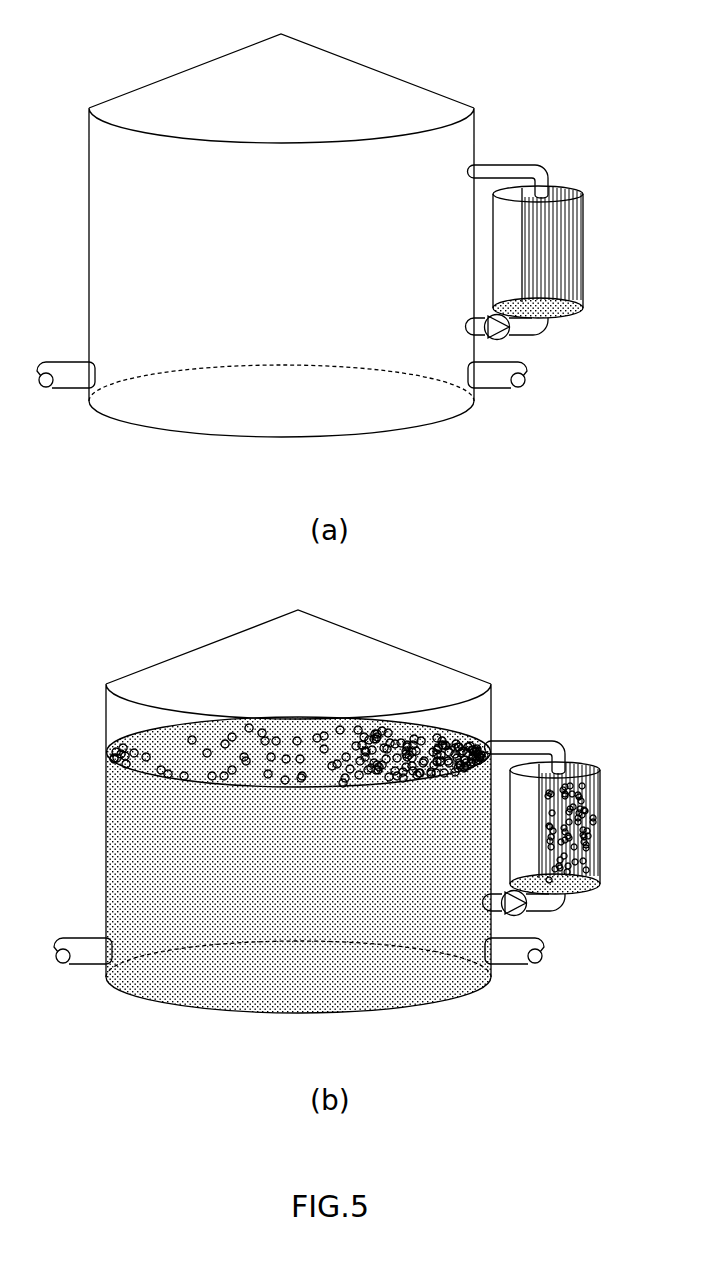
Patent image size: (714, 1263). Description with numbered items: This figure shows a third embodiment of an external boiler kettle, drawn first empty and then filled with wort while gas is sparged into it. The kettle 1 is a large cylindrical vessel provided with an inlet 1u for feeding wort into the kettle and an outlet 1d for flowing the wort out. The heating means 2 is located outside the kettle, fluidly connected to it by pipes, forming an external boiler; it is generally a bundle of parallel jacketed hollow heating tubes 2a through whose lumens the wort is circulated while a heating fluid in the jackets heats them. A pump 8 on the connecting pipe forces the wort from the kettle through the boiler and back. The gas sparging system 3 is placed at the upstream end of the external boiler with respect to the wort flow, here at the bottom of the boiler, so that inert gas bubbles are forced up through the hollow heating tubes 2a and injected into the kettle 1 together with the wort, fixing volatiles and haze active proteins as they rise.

The kettle 1 is at (149, 55).
The inlet 1u is at (81, 358).
The outlet 1d is at (491, 391).
The heating means 2 is at (581, 187).
The hollow heating tubes 2a is at (335, 803).
The gas sparging system 3 is at (558, 328).
The pump 8 is at (493, 314).